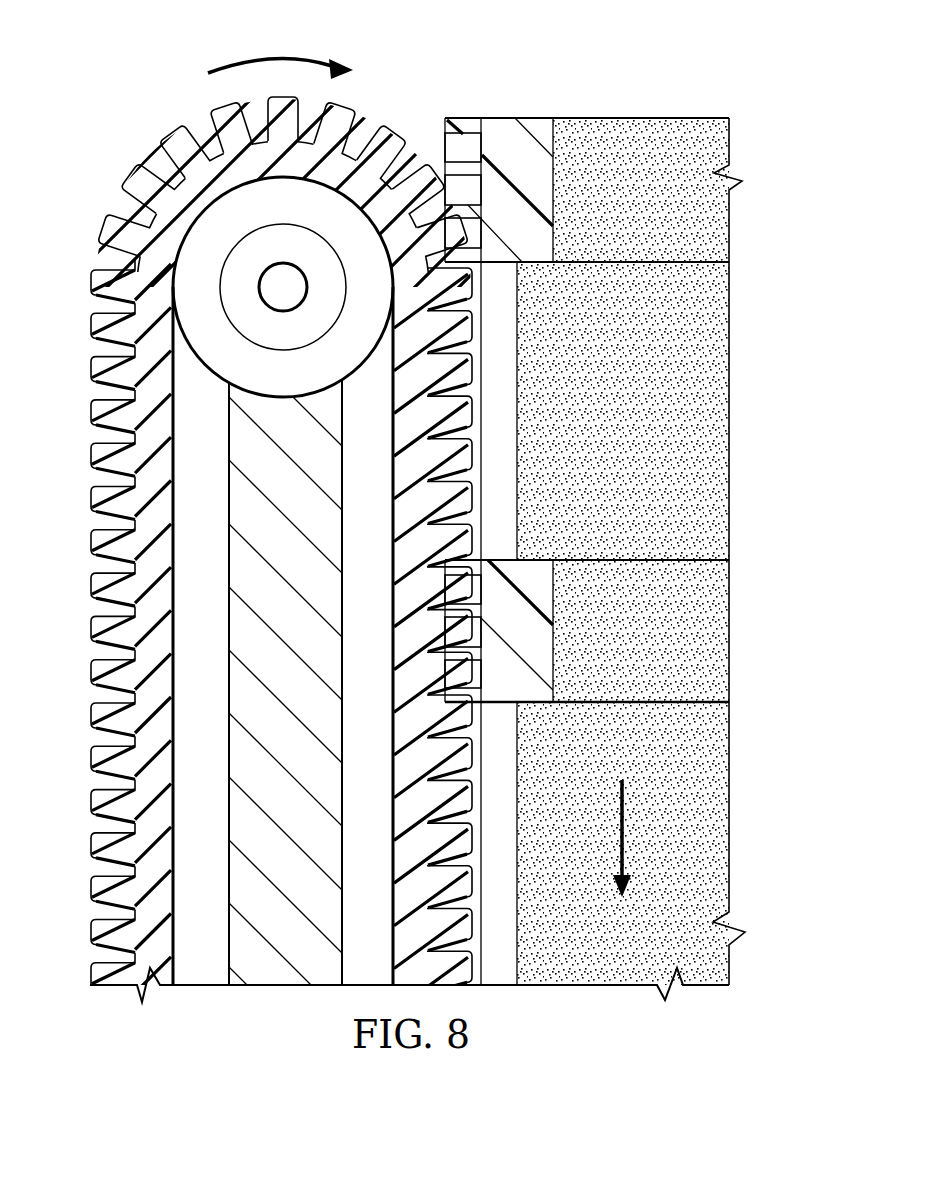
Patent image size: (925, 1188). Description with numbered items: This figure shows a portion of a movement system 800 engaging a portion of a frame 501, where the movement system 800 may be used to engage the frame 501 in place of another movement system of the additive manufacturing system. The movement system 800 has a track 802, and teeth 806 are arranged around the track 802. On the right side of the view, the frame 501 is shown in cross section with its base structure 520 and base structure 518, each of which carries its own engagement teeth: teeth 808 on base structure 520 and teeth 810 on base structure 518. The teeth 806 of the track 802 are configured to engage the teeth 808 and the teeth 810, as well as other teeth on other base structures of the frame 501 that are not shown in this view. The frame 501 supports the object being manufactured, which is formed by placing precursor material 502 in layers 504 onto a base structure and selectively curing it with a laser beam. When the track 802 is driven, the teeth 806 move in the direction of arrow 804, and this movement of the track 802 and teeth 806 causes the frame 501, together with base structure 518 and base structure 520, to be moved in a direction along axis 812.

The movement system 800 is at (97, 60).
The track 802 is at (112, 218).
The arrow 804 is at (250, 62).
The teeth 806 is at (420, 149).
The teeth 808 is at (470, 143).
The teeth 810 is at (440, 548).
The axis 812 is at (625, 825).
The frame 501 is at (638, 552).
The precursor material 502 is at (731, 355).
The layers 504 is at (731, 430).
The base structure 518 is at (537, 693).
The base structure 520 is at (538, 128).